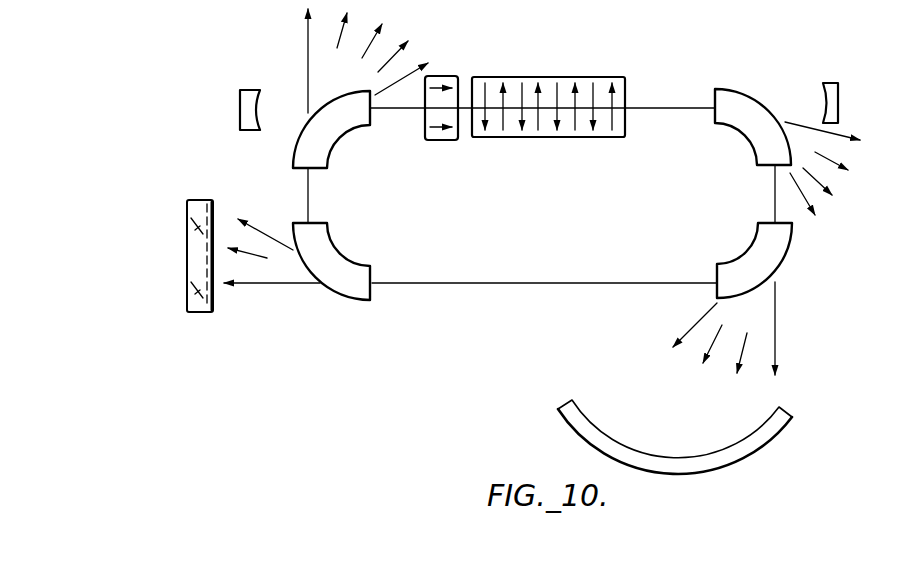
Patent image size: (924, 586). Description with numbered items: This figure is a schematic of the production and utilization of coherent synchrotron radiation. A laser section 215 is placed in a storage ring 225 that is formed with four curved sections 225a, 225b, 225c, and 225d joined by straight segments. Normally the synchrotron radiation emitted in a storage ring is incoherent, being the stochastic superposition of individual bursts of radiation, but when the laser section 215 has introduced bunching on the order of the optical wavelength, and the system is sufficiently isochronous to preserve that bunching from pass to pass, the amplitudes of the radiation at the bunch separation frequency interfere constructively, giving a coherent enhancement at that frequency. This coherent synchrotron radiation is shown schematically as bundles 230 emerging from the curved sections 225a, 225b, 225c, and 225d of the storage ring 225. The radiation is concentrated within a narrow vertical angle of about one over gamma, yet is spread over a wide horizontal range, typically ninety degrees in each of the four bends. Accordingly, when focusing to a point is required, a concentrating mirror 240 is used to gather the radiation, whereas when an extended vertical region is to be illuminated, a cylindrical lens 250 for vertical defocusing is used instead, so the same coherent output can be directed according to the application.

The laser section 215 is at (610, 77).
The storage ring 225 is at (407, 286).
The curved section 225a is at (338, 143).
The curved section 225b is at (750, 152).
The curved section 225c is at (752, 240).
The curved section 225d is at (333, 242).
The bundles 230 is at (827, 173).
The concentrating mirror 240 is at (794, 420).
The cylindrical lens 250 is at (188, 207).